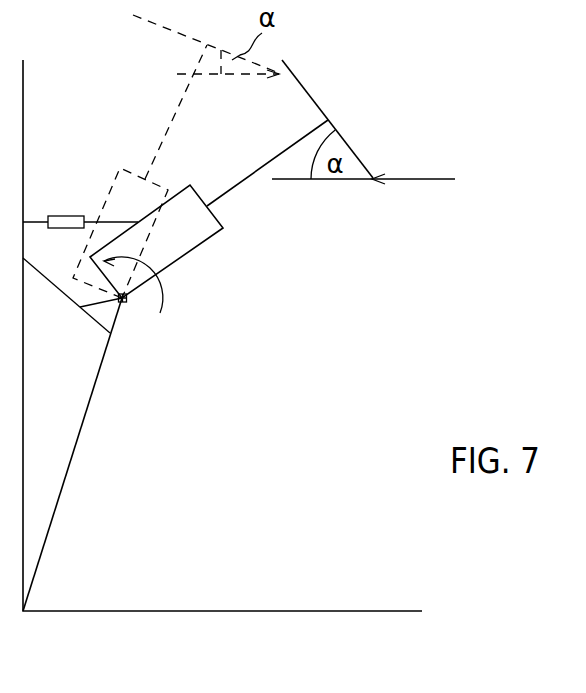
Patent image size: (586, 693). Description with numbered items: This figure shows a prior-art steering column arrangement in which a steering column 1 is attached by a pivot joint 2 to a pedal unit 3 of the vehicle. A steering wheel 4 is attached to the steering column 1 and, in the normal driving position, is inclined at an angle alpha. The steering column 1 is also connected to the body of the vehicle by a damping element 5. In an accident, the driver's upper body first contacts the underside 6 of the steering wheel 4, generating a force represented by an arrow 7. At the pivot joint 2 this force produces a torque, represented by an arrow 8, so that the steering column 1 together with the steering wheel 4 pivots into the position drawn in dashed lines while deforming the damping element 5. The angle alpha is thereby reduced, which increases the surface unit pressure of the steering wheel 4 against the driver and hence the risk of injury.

The steering column 1 is at (192, 238).
The pivot joint 2 is at (128, 303).
The pedal unit 3 is at (58, 442).
The steering wheel 4 is at (334, 119).
The damping element 5 is at (68, 216).
The underside of the steering wheel 6 is at (357, 181).
The arrow 7 is at (432, 178).
The arrow 8 is at (164, 299).